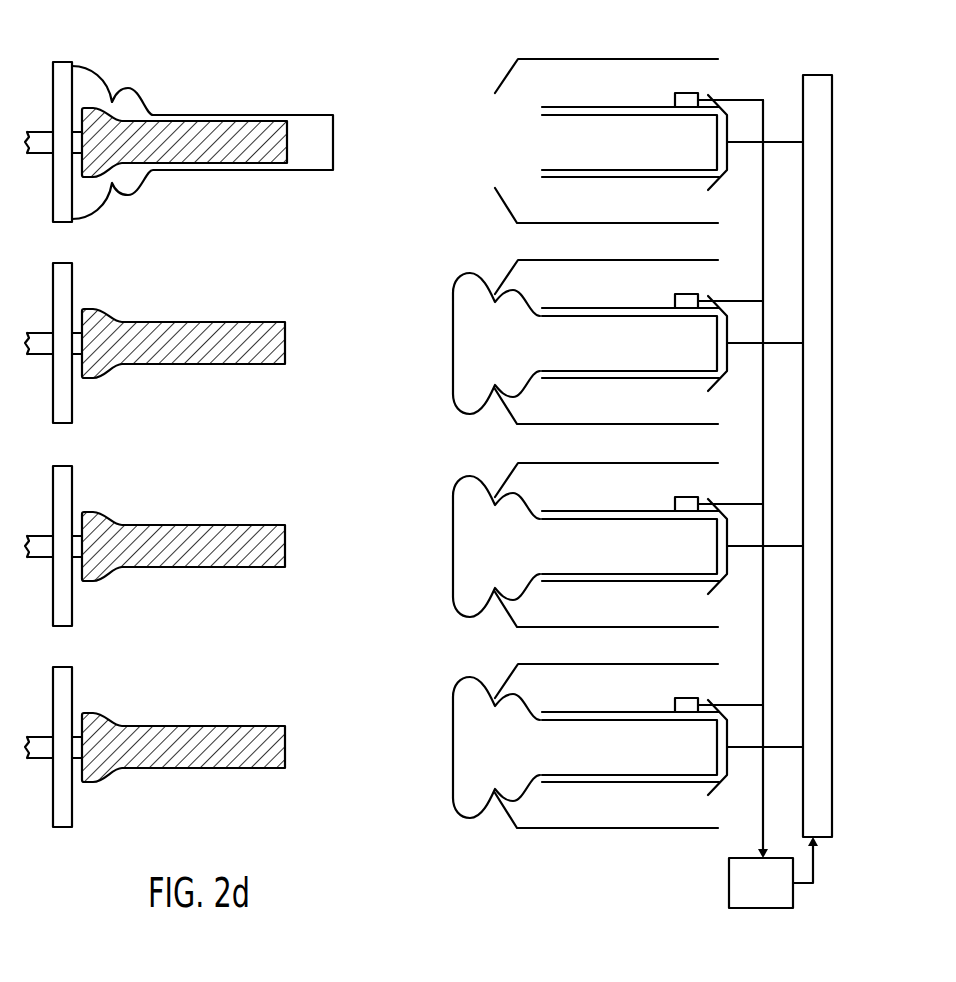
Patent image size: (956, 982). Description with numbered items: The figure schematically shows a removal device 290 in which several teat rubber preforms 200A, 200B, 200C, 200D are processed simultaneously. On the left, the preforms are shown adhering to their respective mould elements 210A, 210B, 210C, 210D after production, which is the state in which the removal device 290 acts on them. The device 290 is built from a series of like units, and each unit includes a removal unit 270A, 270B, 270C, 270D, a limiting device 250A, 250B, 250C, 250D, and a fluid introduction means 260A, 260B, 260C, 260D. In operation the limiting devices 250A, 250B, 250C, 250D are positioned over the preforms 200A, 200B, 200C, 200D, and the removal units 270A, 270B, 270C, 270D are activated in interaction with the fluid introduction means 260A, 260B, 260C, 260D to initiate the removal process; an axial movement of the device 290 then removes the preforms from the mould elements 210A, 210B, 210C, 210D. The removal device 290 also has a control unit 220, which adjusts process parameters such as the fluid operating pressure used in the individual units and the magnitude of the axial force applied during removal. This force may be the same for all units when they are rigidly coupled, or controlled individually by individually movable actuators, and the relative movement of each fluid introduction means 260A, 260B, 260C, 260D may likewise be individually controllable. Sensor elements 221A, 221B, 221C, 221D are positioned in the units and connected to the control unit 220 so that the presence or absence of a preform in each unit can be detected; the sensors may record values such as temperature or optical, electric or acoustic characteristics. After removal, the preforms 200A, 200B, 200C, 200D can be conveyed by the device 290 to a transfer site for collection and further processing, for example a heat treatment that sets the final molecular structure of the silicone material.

The preform 200A is at (97, 72).
The mould element 210A is at (175, 130).
The mould element 210B is at (175, 331).
The mould element 210C is at (175, 534).
The mould element 210D is at (175, 735).
The preform 200B is at (453, 296).
The preform 200C is at (453, 499).
The preform 200D is at (453, 700).
The removal unit 270A is at (578, 58).
The removal unit 270B is at (578, 259).
The removal unit 270C is at (578, 462).
The removal unit 270D is at (578, 663).
The limiting device 250A is at (590, 178).
The limiting device 250B is at (590, 379).
The limiting device 250C is at (590, 582).
The limiting device 250D is at (590, 783).
The fluid introduction means 260A is at (724, 98).
The fluid introduction means 260B is at (724, 299).
The fluid introduction means 260C is at (724, 502).
The fluid introduction means 260D is at (724, 703).
The sensor element 221A is at (689, 92).
The sensor element 221B is at (689, 293).
The sensor element 221C is at (689, 496).
The sensor element 221D is at (689, 697).
The removal device 290 is at (837, 43).
The control unit 220 is at (778, 900).